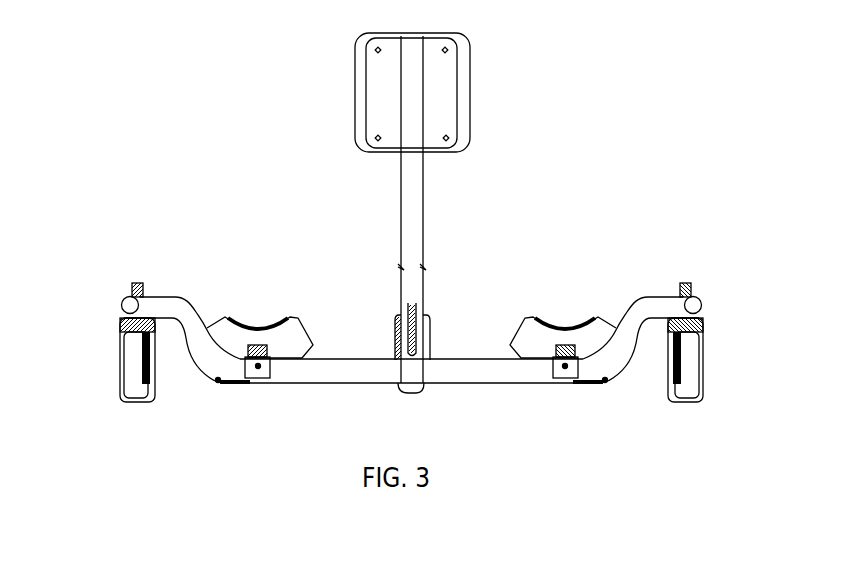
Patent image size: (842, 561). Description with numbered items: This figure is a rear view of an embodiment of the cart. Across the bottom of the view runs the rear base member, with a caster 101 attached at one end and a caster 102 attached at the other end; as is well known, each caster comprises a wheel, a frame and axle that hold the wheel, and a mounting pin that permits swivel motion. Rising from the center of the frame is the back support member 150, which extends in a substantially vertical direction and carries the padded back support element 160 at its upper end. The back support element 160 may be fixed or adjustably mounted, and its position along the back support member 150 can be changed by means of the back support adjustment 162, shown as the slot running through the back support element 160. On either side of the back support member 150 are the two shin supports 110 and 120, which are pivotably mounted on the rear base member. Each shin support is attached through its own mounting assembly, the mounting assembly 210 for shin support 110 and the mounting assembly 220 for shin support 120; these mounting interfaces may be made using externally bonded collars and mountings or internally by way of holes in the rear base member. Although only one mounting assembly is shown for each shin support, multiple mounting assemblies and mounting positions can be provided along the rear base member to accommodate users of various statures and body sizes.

The caster 101 is at (678, 363).
The caster 102 is at (133, 367).
The shin support 110 is at (588, 337).
The shin support 120 is at (230, 338).
The back support member 150 is at (412, 215).
The back support element 160 is at (465, 92).
The back support adjustment 162 is at (427, 67).
The mounting assembly 210 is at (566, 368).
The mounting assembly 220 is at (257, 368).